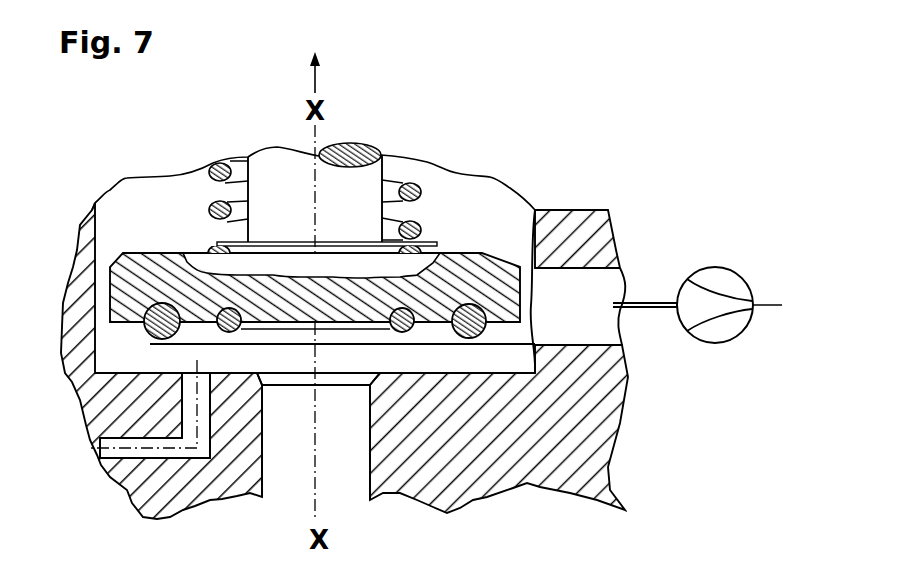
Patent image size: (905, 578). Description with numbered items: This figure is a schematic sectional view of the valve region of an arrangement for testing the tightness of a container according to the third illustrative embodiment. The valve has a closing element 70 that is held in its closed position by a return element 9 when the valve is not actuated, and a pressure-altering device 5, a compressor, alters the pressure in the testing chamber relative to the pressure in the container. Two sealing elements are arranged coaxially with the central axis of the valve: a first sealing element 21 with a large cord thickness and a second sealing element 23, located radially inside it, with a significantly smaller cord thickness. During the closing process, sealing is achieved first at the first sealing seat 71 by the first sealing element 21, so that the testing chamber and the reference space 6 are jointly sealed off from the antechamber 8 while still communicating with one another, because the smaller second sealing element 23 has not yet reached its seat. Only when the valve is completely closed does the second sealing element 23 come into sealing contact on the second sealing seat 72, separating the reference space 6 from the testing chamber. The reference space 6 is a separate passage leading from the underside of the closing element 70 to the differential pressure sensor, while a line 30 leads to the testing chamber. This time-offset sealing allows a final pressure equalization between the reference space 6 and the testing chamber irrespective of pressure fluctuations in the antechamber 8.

The pressure-altering device 5 is at (722, 280).
The reference space 6 is at (175, 452).
The antechamber 8 is at (510, 220).
The return element 9 is at (411, 183).
The first sealing element 21 is at (473, 339).
The second sealing element 23 is at (402, 333).
The line 30 is at (282, 467).
The closing element 70 is at (474, 273).
The first sealing seat 71 is at (397, 385).
The second sealing seat 72 is at (234, 386).